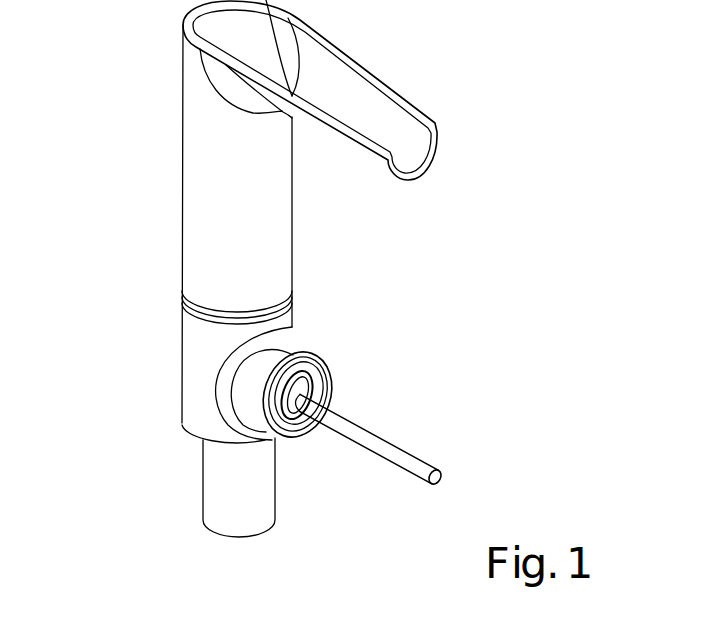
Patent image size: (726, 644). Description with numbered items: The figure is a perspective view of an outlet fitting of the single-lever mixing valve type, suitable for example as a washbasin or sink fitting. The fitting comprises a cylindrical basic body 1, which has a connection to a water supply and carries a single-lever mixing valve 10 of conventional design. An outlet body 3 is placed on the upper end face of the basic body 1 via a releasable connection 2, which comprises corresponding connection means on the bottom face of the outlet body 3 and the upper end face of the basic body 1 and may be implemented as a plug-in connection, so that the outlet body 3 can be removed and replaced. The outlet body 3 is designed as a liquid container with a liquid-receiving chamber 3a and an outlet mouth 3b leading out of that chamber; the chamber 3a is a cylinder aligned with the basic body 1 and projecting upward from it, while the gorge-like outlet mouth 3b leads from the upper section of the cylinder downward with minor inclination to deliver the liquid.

The basic body 1 is at (197, 436).
The releasable connection 2 is at (182, 312).
The outlet body 3 is at (292, 187).
The liquid-receiving chamber 3a is at (182, 141).
The outlet mouth 3b is at (368, 71).
The single-lever mixing valve 10 is at (320, 373).